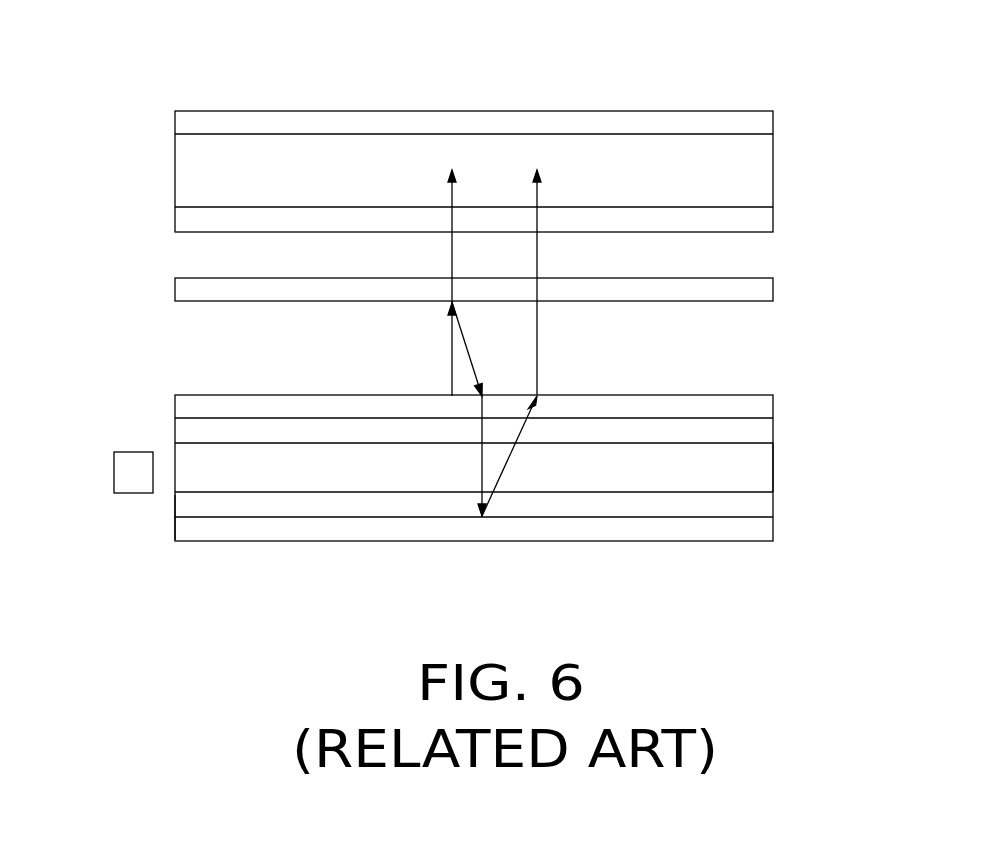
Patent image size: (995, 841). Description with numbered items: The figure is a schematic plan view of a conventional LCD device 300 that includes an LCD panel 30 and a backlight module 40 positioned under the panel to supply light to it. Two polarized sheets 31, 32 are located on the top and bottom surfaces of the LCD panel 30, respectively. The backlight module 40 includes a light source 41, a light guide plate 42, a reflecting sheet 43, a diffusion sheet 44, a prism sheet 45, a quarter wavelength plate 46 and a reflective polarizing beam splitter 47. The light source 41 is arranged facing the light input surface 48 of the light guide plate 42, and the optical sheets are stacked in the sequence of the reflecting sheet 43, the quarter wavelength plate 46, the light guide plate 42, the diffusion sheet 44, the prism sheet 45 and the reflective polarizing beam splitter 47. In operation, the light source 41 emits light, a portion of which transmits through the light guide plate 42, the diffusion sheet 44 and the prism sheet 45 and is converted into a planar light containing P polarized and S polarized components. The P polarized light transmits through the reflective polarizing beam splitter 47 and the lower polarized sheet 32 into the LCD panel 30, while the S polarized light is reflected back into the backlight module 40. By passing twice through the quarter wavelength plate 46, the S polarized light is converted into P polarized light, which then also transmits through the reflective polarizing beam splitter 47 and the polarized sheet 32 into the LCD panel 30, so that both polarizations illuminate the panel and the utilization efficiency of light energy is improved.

The LCD device 300 is at (535, 70).
The LCD panel 30 is at (513, 175).
The polarized sheet 31 is at (762, 125).
The polarized sheet 32 is at (755, 220).
The reflective polarizing beam splitter 47 is at (755, 285).
The backlight module 40 is at (464, 493).
The light source 41 is at (125, 475).
The light guide plate 42 is at (748, 472).
The reflecting sheet 43 is at (765, 530).
The diffusion sheet 44 is at (760, 433).
The prism sheet 45 is at (753, 405).
The quarter wavelength plate 46 is at (748, 505).
The light input surface 48 is at (175, 512).